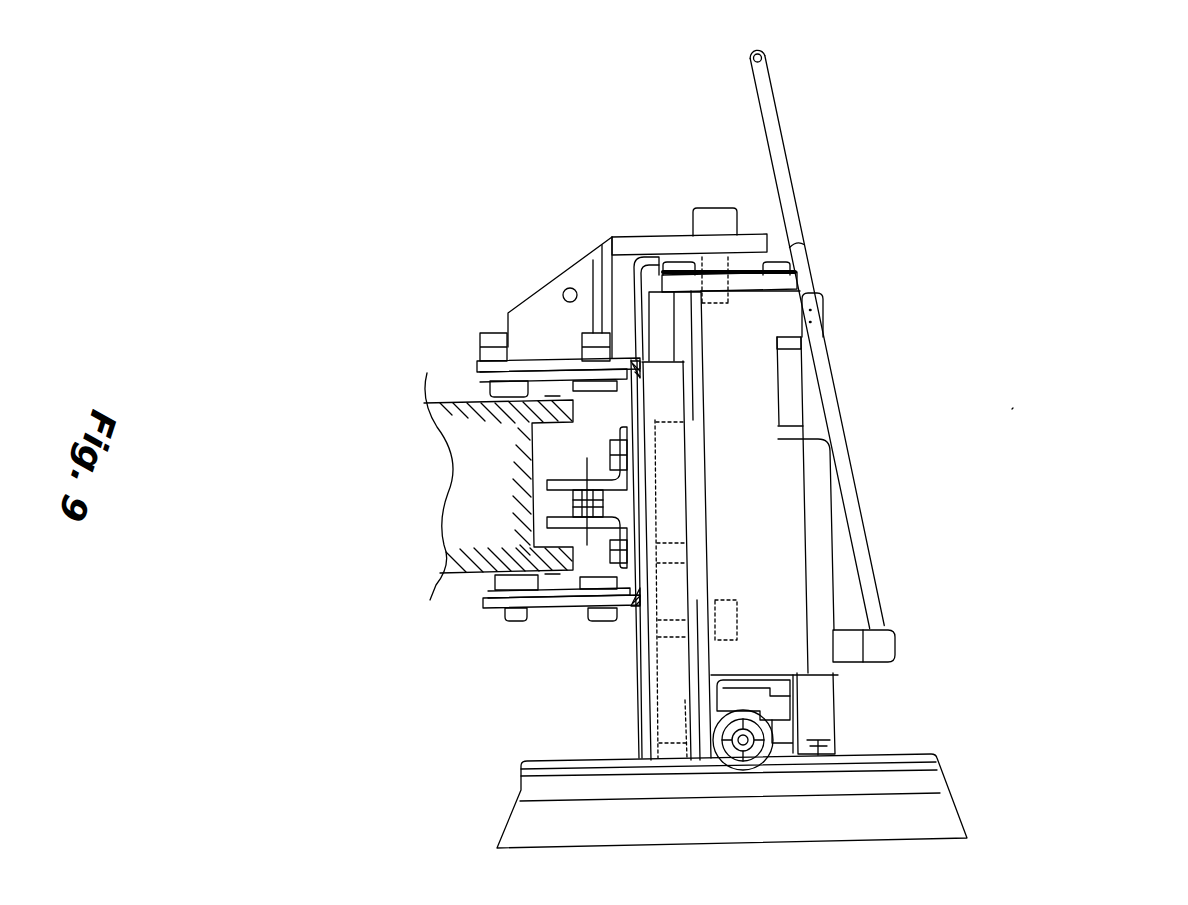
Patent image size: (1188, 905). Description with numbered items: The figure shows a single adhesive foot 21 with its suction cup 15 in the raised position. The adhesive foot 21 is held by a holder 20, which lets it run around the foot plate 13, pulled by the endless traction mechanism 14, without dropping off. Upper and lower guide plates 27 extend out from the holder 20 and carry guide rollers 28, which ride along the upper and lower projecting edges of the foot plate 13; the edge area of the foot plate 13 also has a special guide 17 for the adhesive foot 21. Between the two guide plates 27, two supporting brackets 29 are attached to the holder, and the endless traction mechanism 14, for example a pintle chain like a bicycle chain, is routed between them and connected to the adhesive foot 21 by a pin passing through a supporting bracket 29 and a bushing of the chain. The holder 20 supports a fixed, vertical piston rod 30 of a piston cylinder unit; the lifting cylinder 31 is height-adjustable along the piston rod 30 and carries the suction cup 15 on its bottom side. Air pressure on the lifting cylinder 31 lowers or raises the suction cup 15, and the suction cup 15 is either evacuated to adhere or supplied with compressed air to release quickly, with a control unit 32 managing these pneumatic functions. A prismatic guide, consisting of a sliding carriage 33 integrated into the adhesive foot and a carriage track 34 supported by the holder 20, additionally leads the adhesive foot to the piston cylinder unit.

The foot plate 13 is at (488, 515).
The endless traction mechanism 14 is at (573, 507).
The suction cup 15 is at (913, 787).
The guide 17 is at (553, 388).
The holder 20 is at (581, 262).
The adhesive foot 21 is at (1014, 408).
The guide plate 27 is at (570, 367).
The guide roller 28 is at (507, 390).
The supporting bracket 29 is at (558, 482).
The piston rod 30 is at (710, 227).
The lifting cylinder 31 is at (747, 322).
The control unit 32 is at (817, 505).
The sliding carriage 33 is at (667, 323).
The carriage track 34 is at (667, 718).